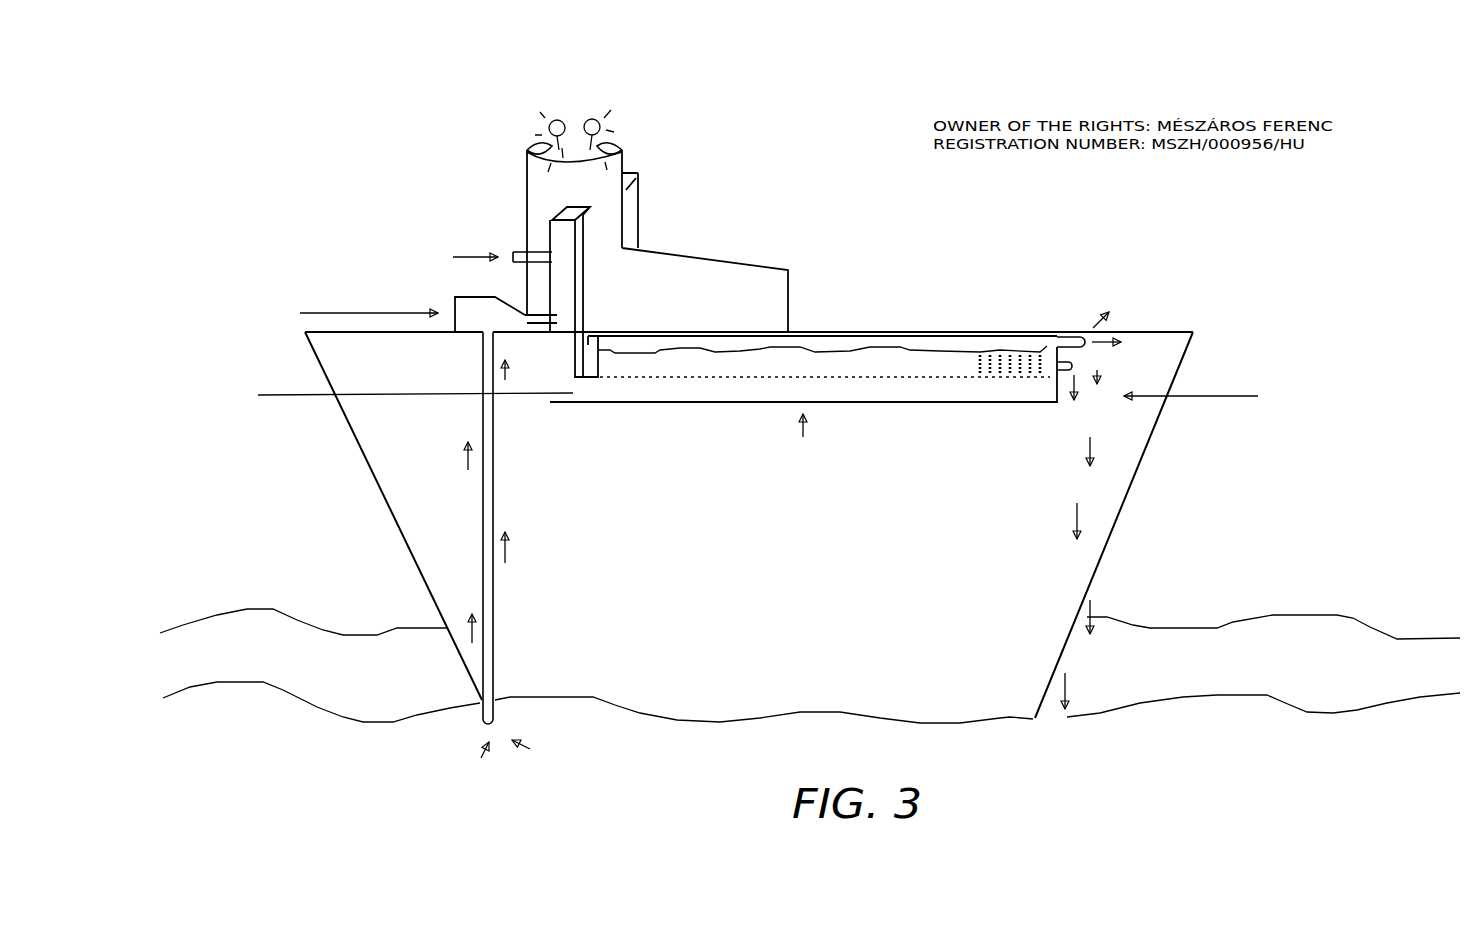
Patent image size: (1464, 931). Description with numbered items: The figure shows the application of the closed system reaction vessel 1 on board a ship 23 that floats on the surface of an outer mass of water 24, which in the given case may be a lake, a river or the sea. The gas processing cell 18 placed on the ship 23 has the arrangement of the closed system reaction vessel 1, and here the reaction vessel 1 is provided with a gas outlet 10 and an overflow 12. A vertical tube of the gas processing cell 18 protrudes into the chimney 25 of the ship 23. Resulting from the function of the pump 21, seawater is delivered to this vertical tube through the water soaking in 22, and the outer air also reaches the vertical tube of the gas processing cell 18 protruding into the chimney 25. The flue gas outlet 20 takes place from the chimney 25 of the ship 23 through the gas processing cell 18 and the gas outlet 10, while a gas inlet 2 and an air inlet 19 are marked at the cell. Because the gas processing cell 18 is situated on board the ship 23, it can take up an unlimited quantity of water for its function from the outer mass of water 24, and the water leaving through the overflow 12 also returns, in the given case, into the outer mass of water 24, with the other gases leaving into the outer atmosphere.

The closed system reaction vessel 1 is at (815, 370).
The gas inlet 2 is at (341, 399).
The gas outlet 10 is at (1070, 338).
The overflow 12 is at (1073, 366).
The gas processing cell 18 is at (831, 427).
The air inlet 19 is at (463, 254).
The flue gas outlet 20 is at (693, 137).
The pump 21 is at (358, 306).
The water soaking in 22 is at (596, 528).
The ship 23 is at (373, 482).
The outer mass of water 24 is at (810, 727).
The chimney 25 is at (593, 193).